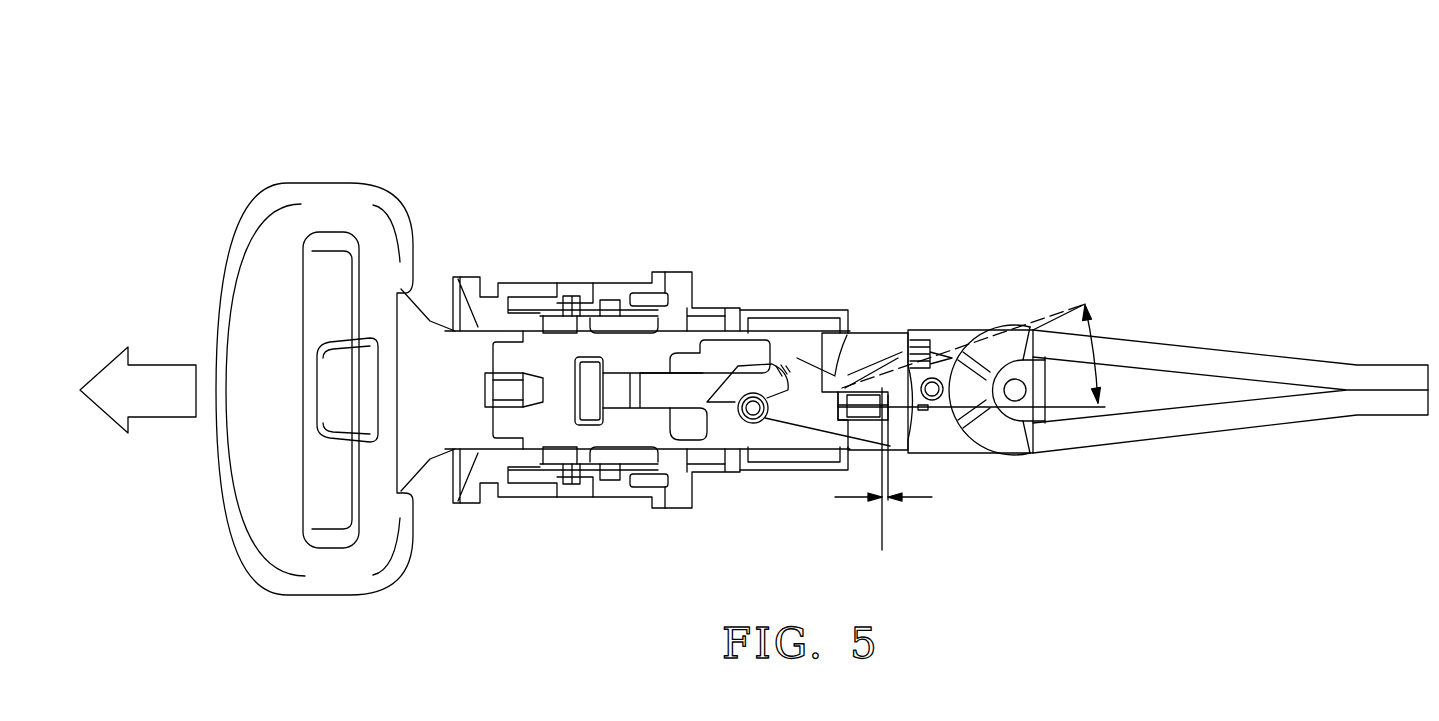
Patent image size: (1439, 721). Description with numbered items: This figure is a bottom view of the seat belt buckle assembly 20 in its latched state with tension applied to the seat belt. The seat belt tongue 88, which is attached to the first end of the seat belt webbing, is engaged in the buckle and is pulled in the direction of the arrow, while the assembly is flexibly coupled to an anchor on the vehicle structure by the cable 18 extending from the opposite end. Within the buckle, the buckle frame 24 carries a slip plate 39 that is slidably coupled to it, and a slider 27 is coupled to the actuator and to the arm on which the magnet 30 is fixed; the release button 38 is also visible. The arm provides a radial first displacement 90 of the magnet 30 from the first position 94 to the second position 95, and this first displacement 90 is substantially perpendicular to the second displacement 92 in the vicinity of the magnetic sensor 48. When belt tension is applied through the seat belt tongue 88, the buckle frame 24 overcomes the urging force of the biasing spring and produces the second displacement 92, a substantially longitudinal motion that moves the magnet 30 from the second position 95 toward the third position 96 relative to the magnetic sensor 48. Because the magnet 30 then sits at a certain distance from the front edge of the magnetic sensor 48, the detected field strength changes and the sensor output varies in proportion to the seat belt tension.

The cable 18 is at (1370, 375).
The seat belt buckle assembly 20 is at (1108, 122).
The buckle frame 24 is at (553, 360).
The slider 27 is at (745, 352).
The magnet 30 is at (834, 455).
The release button 38 is at (508, 492).
The slip plate 39 is at (950, 340).
The magnetic sensor 48 is at (850, 415).
The seat belt tongue 88 is at (252, 214).
The first displacement 90 is at (1103, 338).
The second displacement 92 is at (917, 500).
The first position 94 is at (1053, 315).
The second position 95 is at (1045, 537).
The third position 96 is at (878, 527).